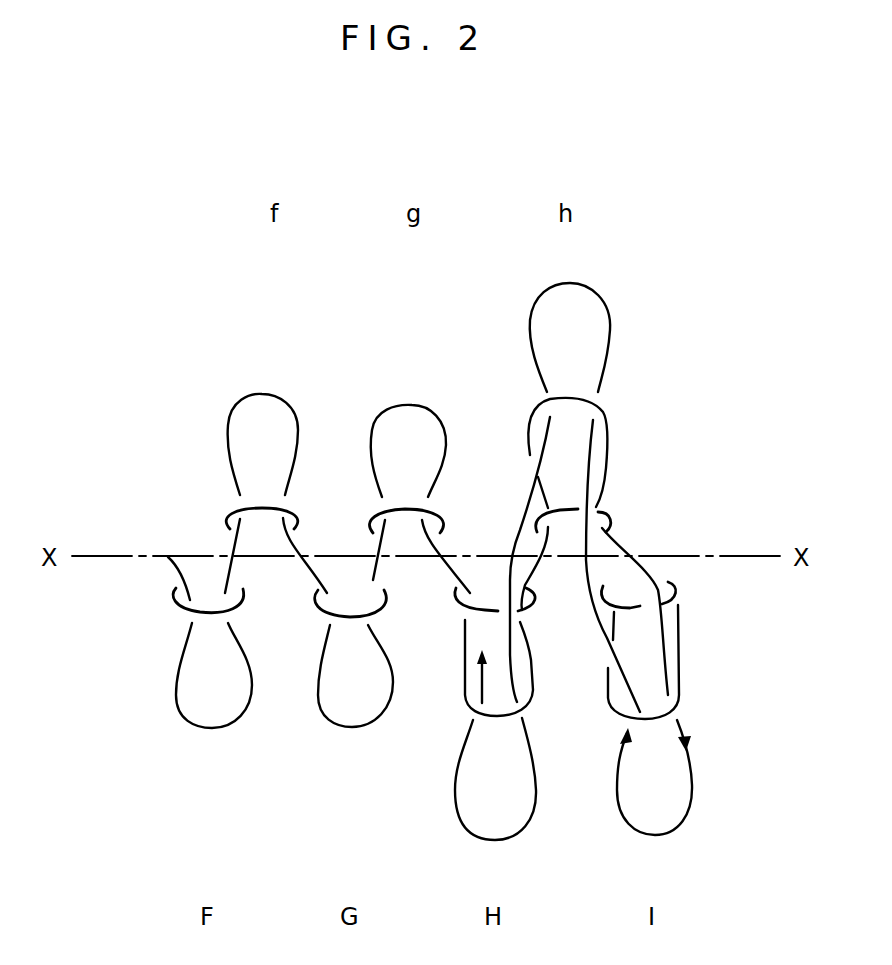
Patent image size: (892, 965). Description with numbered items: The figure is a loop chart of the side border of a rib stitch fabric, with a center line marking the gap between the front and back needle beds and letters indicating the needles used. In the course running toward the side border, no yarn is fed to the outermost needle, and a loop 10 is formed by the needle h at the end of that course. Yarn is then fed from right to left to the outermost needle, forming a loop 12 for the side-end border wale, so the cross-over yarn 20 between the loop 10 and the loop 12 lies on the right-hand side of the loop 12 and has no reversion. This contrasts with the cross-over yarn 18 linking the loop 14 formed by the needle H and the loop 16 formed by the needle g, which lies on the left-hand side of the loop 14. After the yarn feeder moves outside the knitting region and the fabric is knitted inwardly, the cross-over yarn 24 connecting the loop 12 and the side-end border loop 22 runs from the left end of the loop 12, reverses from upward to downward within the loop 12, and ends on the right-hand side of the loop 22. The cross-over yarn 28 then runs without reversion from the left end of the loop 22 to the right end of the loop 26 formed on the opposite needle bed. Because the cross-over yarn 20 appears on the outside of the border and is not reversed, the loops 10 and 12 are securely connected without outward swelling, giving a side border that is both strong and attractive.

The loop 10 is at (610, 443).
The loop 12 is at (680, 677).
The loop 14 is at (465, 688).
The loop 16 is at (420, 403).
The cross-over yarn 18 is at (452, 578).
The cross-over yarn 20 is at (613, 550).
The side-end border loop 22 is at (693, 803).
The cross-over yarn 24 is at (662, 637).
The loop 26 is at (607, 313).
The cross-over yarn 28 is at (600, 630).